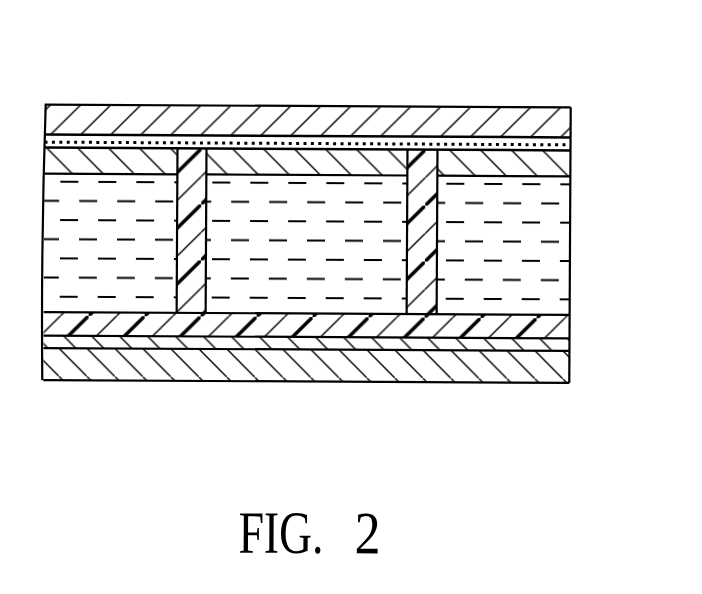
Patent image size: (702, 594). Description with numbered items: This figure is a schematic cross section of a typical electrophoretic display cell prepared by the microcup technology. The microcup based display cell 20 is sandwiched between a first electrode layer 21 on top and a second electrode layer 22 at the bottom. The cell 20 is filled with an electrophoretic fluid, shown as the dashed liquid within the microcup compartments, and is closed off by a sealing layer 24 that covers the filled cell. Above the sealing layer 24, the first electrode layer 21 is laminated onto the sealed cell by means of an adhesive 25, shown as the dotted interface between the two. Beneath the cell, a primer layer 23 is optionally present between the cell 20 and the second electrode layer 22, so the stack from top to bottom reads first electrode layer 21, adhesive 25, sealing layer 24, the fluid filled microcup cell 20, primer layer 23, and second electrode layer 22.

The microcup based display cell 20 is at (430, 237).
The first electrode layer 21 is at (372, 108).
The second electrode layer 22 is at (390, 366).
The primer layer 23 is at (172, 340).
The sealing layer 24 is at (252, 158).
The adhesive 25 is at (137, 142).